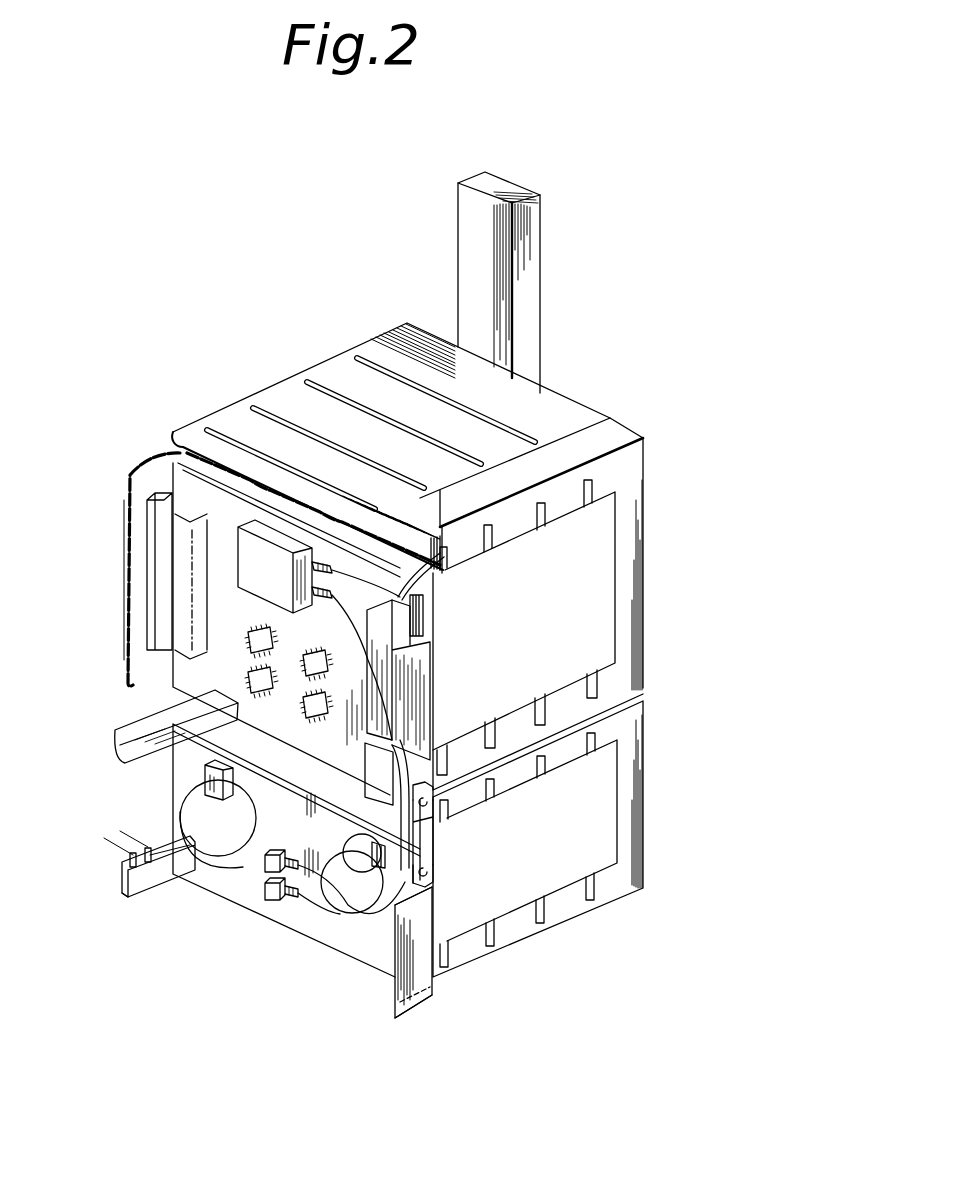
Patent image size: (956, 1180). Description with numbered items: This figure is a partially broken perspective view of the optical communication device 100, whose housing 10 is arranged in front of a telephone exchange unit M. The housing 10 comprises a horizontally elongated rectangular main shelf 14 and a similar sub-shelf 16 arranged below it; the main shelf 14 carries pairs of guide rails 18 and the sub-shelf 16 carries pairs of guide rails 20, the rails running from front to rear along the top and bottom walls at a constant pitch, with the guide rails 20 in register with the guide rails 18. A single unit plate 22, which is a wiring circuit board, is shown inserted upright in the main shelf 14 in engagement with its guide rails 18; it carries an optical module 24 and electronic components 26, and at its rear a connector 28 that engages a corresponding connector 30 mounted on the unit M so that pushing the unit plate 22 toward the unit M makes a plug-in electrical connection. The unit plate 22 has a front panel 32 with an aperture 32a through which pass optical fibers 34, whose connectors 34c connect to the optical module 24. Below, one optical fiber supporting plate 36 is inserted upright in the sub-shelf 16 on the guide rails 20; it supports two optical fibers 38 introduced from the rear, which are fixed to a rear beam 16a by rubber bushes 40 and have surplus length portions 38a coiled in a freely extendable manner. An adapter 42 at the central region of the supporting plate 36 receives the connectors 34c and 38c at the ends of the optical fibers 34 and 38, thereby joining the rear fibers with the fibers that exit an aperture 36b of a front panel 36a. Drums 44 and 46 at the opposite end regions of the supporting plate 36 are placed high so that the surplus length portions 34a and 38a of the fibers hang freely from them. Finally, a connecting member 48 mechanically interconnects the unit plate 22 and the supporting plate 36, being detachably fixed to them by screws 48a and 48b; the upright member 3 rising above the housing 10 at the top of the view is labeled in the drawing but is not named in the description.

The post 3 is at (503, 191).
The optical communication device 100 is at (616, 354).
The housing 10 is at (541, 414).
The main shelf 14 is at (643, 563).
The sub-shelf 16 is at (643, 796).
The rear beam 16a is at (157, 903).
The guide rails 18 is at (586, 510).
The guide rails 20 is at (590, 758).
The unit plate 22 is at (207, 497).
The telephone exchange unit M is at (135, 521).
The optical module 24 is at (250, 569).
The electronic components 26 is at (260, 639).
The connector 28 is at (182, 622).
The connector 30 is at (150, 606).
The front panel 32 is at (422, 687).
The aperture 32a is at (410, 720).
The optical fibers 34 is at (430, 755).
The surplus length portions 34a is at (340, 914).
The connectors 34c is at (405, 598).
The optical fiber supporting plate 36 is at (381, 966).
The front panel 36a is at (433, 993).
The aperture 36b is at (427, 888).
The optical fibers 38 is at (120, 831).
The surplus length portions 38a is at (207, 797).
The connectors 38c is at (263, 882).
The rubber bushes 40 is at (118, 887).
The adapter 42 is at (270, 891).
The drum 44 is at (244, 797).
The drum 46 is at (352, 848).
The connecting member 48 is at (430, 840).
The screw 48a is at (433, 803).
The screw 48b is at (433, 879).